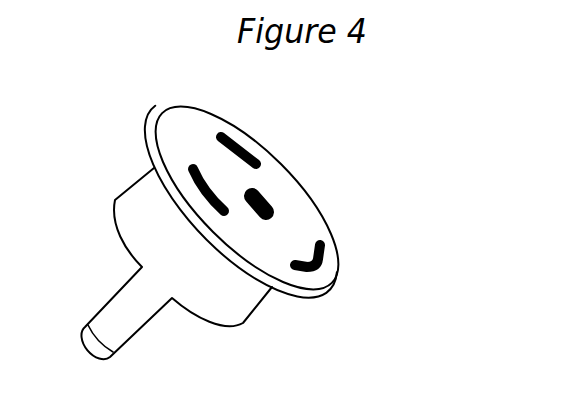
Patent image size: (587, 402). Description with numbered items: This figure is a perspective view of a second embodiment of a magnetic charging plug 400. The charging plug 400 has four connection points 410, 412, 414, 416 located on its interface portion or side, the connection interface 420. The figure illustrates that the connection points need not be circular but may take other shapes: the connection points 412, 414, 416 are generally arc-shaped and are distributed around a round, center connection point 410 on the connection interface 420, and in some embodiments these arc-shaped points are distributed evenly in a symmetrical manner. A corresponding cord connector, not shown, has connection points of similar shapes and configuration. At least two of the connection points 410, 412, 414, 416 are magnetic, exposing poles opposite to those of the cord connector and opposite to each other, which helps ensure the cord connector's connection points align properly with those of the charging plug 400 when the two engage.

The charging plug 400 is at (232, 304).
The center connection point 410 is at (268, 205).
The connection point 412 is at (330, 258).
The connection point 414 is at (248, 145).
The connection point 416 is at (190, 170).
The connection interface 420 is at (213, 153).